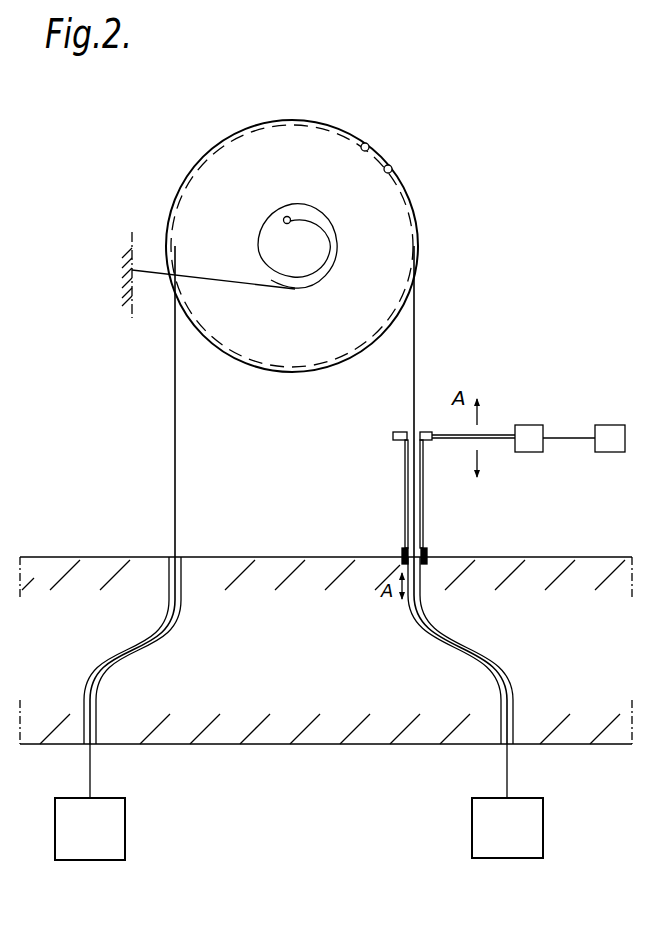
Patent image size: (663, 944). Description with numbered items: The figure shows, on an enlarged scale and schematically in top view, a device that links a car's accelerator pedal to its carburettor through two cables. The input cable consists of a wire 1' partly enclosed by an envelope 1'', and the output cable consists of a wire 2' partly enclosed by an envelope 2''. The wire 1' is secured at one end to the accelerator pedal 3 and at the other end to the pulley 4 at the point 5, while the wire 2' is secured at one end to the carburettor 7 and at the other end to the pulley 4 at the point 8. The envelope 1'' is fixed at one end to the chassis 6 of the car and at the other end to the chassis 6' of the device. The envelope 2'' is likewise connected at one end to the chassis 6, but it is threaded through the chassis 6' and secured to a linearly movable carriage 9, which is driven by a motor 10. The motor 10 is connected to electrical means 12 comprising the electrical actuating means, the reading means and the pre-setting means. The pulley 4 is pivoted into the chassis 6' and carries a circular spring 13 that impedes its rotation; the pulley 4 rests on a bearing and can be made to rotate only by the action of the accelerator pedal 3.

The wire 1' is at (140, 401).
The envelope 1'' is at (132, 631).
The wire 2' is at (436, 401).
The envelope 2'' is at (460, 632).
The accelerator pedal 3 is at (125, 831).
The pulley 4 is at (293, 130).
The point 5 is at (371, 141).
The chassis 6 is at (326, 672).
The chassis 6' is at (287, 535).
The carburettor 7 is at (472, 828).
The point 8 is at (394, 164).
The carriage 9 is at (440, 446).
The motor 10 is at (537, 425).
The electrical means 12 is at (605, 425).
The circular spring 13 is at (318, 254).